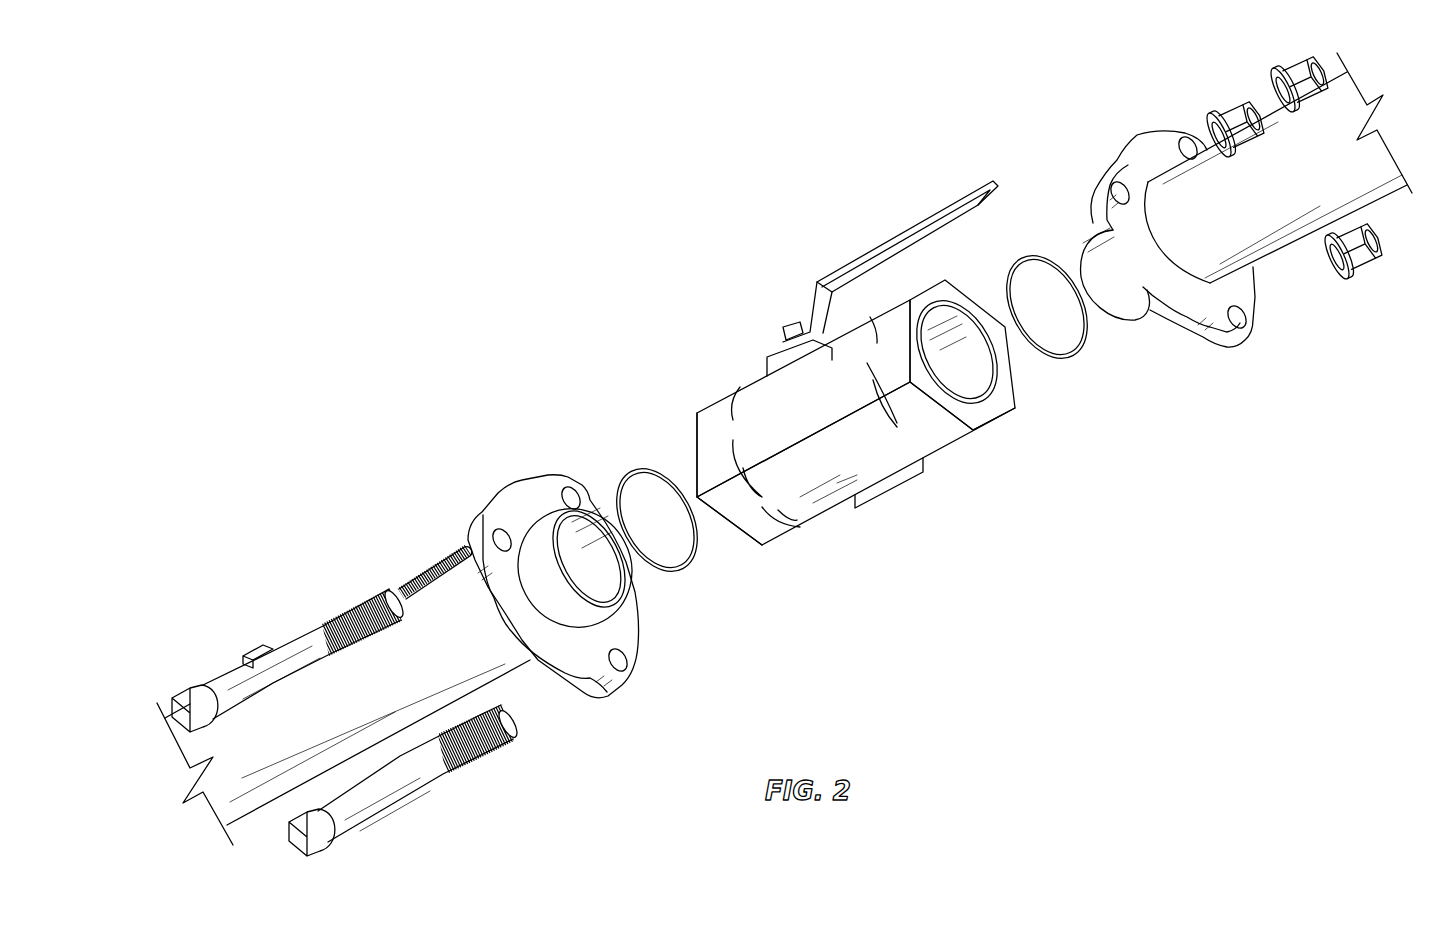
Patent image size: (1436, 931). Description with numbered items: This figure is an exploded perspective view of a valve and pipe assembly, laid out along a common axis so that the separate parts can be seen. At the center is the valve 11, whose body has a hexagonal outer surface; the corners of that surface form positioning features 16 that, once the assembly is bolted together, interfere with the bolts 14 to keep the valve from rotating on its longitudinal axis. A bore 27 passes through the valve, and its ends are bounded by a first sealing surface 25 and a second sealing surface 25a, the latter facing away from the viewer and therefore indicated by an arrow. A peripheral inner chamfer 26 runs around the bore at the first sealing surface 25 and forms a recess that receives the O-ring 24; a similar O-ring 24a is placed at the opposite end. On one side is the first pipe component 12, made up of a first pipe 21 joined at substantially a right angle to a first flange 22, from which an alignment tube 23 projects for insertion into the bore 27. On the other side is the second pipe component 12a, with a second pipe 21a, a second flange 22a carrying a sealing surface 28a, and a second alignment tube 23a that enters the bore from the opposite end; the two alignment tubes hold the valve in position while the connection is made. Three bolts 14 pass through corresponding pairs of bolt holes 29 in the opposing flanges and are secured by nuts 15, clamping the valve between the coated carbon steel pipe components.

The valve 11 is at (887, 458).
The first pipe component 12 is at (1184, 103).
The second pipe component 12a is at (226, 624).
The bolts 14 is at (246, 699).
The nuts 15 is at (1250, 103).
The positioning features 16 is at (712, 455).
The first pipe 21 is at (1377, 198).
The second pipe 21a is at (460, 654).
The first flange 22 is at (1200, 330).
The second flange 22a is at (590, 657).
The alignment tube 23 is at (1130, 322).
The alignment tube 23a is at (582, 612).
The O-ring 24 is at (1072, 360).
The O-ring 24a is at (680, 573).
The first sealing surface 25 is at (1015, 410).
The second sealing surface 25a is at (740, 550).
The chamfer 26 is at (975, 403).
The bore 27 is at (959, 333).
The sealing surface 28a is at (566, 632).
The bolt holes 29 is at (565, 495).